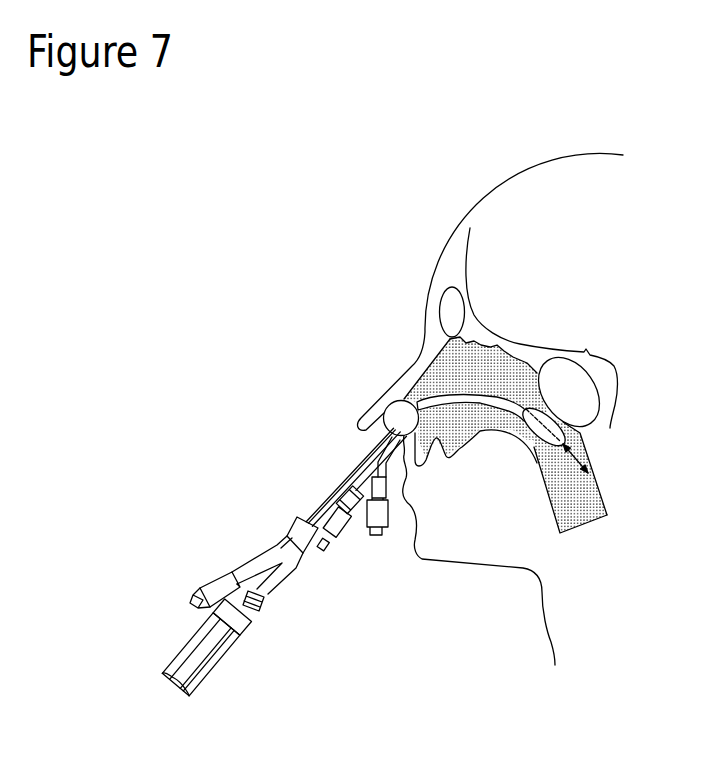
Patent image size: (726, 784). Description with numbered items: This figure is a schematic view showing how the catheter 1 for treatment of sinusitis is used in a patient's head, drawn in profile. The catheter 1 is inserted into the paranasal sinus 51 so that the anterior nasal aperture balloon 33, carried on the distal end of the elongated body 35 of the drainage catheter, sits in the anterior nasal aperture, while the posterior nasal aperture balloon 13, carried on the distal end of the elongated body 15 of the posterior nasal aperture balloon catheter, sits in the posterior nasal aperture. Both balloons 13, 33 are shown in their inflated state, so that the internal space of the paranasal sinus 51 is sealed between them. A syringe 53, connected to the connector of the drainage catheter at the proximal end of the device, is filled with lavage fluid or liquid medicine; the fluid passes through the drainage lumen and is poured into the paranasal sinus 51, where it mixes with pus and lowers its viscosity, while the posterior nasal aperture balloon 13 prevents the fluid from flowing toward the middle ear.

The catheter for treatment of sinusitis 1 is at (269, 495).
The posterior nasal aperture balloon 13 is at (562, 425).
The elongated body 15 is at (497, 392).
The anterior nasal aperture balloon 33 is at (397, 412).
The elongated body 35 is at (333, 502).
The paranasal sinus 51 is at (428, 383).
The syringe 53 is at (190, 638).